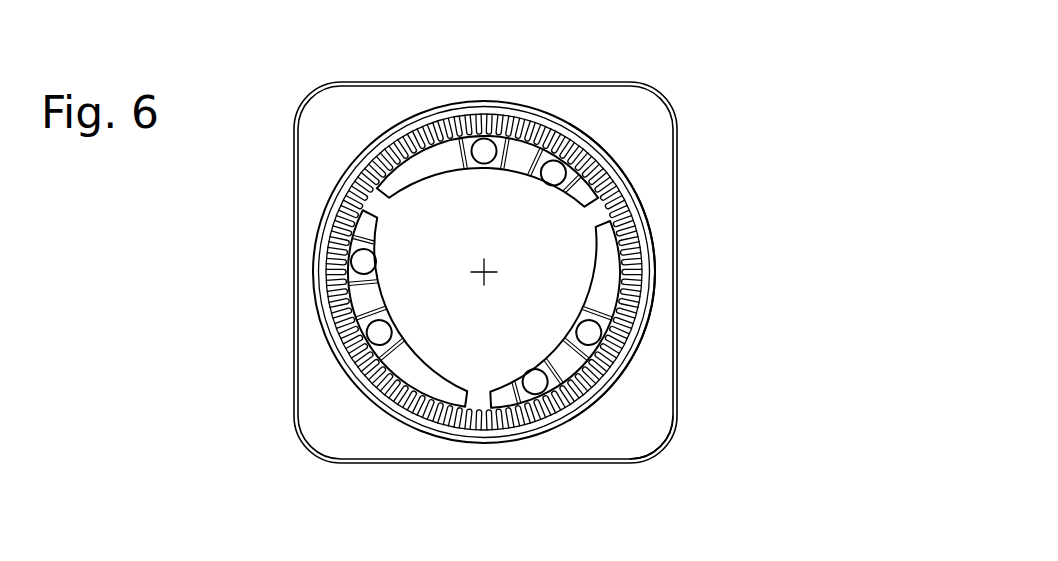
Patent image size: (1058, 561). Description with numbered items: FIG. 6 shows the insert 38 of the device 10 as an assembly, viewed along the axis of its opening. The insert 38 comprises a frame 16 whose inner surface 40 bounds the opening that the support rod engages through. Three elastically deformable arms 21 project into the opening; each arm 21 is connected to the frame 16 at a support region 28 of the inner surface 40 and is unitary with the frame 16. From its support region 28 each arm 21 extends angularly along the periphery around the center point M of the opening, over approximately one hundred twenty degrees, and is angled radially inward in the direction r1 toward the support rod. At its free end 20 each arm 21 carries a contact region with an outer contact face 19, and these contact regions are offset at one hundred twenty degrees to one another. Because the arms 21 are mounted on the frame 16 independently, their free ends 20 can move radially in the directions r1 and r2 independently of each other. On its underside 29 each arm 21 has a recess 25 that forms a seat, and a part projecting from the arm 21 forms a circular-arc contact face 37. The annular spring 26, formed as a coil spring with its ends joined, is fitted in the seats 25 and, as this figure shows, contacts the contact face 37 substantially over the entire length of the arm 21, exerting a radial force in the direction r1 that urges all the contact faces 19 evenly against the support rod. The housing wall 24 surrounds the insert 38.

The actuator device 10 is at (711, 117).
The frame 16 is at (337, 427).
The outer contact face 19 is at (385, 254).
The free end 20 is at (574, 137).
The elastically deformable arm 21 is at (483, 139).
The outer circumferential surface 24 is at (437, 102).
The recess 25 is at (543, 104).
The annular spring 26 is at (636, 213).
The support region 28 is at (350, 163).
The underside 29 is at (654, 410).
The contact face 37 is at (410, 132).
The insert 38 is at (664, 88).
The inner surface 40 is at (648, 279).
The center point M is at (476, 278).
The radially inward direction r1 is at (388, 235).
The radially outward direction r2 is at (601, 147).